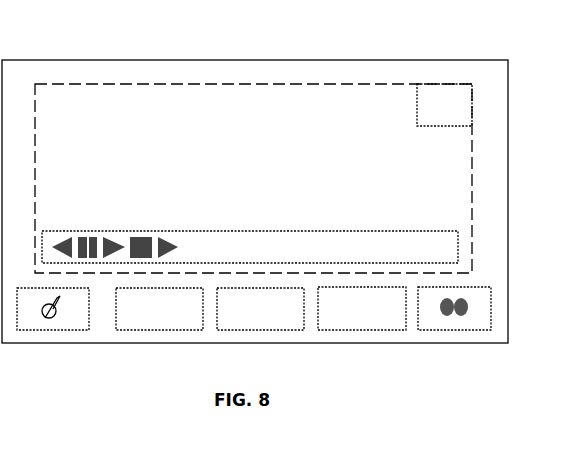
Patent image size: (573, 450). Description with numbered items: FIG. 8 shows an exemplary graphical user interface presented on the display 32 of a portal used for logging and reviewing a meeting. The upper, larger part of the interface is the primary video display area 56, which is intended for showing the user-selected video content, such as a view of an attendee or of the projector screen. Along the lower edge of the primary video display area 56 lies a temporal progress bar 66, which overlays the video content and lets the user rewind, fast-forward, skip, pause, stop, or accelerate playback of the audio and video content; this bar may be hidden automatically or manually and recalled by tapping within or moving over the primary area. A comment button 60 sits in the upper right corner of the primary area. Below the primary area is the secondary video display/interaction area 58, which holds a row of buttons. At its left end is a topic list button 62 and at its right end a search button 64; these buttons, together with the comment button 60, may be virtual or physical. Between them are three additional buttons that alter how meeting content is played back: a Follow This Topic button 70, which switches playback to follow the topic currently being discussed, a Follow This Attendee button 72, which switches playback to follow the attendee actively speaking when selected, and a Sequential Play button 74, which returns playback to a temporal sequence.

The display 32 is at (275, 60).
The primary video display area 56 is at (231, 197).
The comment button 60 is at (440, 127).
The temporal progress bar 66 is at (333, 240).
The topic list button 62 is at (70, 331).
The secondary video display/interaction area 58 is at (257, 332).
The Follow This Topic button 70 is at (149, 318).
The Follow This Attendee button 72 is at (250, 318).
The Sequential Play button 74 is at (352, 317).
The search button 64 is at (491, 306).